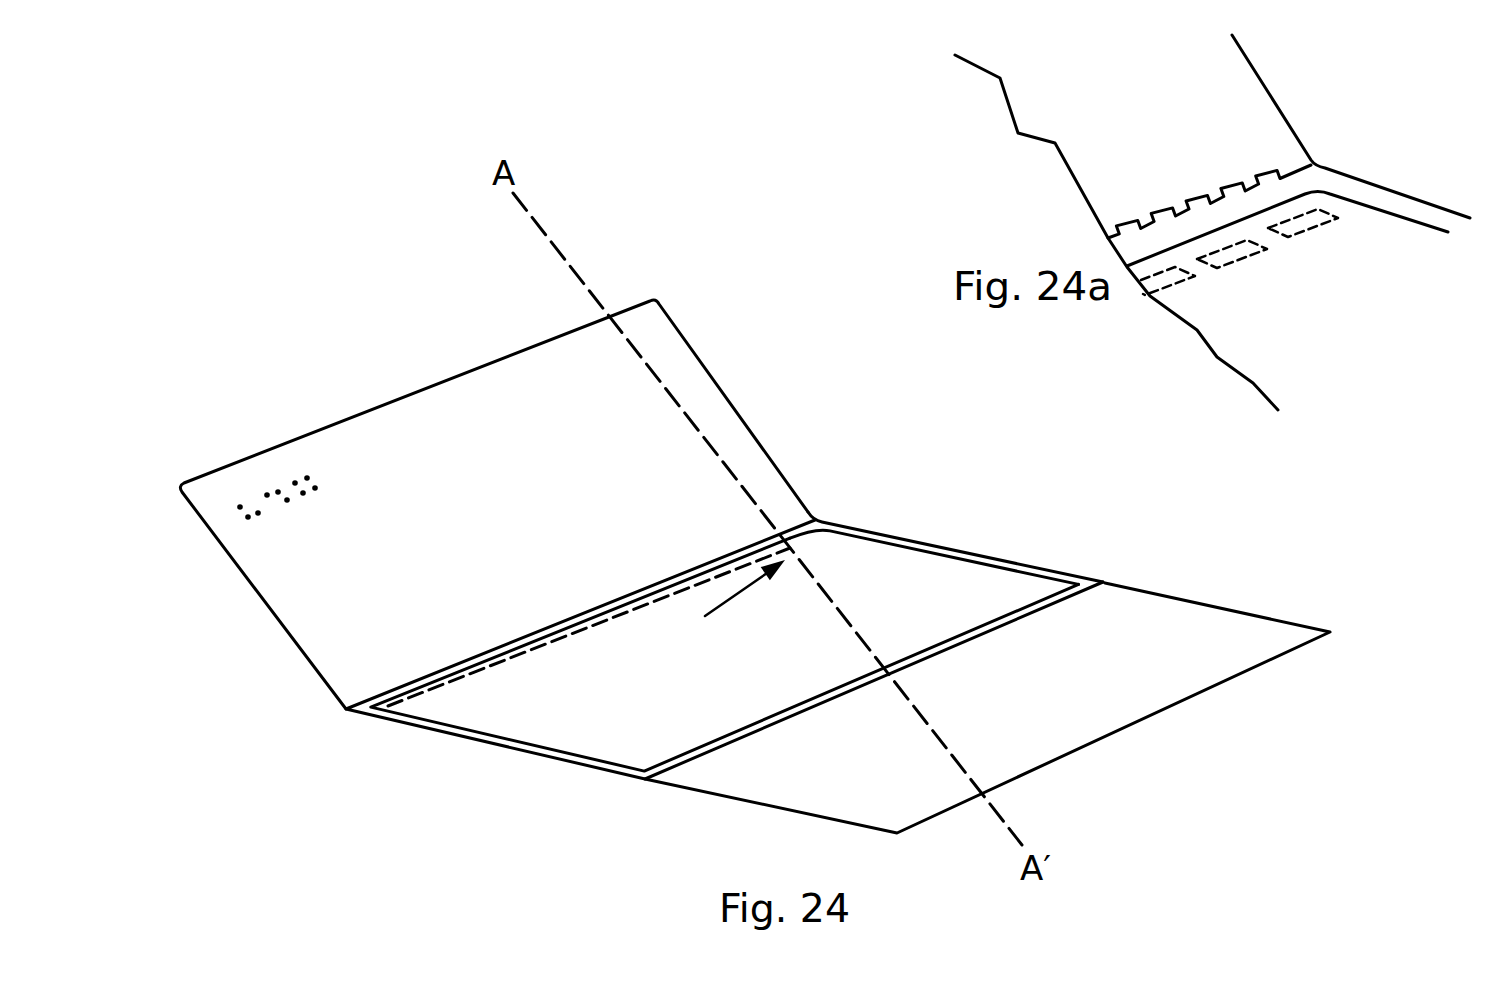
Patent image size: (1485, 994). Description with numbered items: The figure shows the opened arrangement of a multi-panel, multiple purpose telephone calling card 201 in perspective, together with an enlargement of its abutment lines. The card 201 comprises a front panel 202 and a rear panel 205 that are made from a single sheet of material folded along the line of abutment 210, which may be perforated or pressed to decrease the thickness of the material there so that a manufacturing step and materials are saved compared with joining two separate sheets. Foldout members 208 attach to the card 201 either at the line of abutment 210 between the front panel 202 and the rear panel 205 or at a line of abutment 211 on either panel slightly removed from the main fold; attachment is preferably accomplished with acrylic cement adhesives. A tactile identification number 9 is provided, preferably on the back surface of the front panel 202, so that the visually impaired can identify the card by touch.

In FIG. 24, the tactile identification number 9 is at (262, 490).
In FIG. 24, the multi-panel, multiple purpose telephone calling card 201 is at (757, 392).
In FIG. 24, the front panel 202 is at (653, 347).
In FIG. 24, the rear panel 205 is at (1080, 573).
In FIG. 24, the foldout members 208 is at (793, 790).
In FIG. 24, the line of abutment 210 is at (795, 522).
In FIG. 24A, the line of abutment 210 is at (1177, 203).
In FIG. 24, the line of abutment 211 is at (801, 531).
In FIG. 24A, the line of abutment 211 is at (1290, 236).